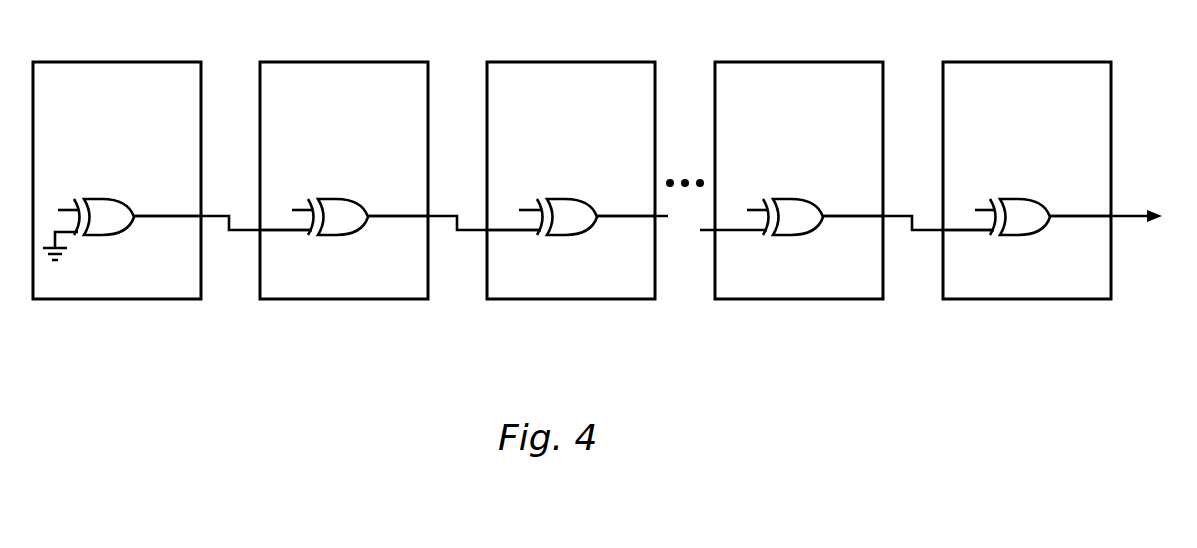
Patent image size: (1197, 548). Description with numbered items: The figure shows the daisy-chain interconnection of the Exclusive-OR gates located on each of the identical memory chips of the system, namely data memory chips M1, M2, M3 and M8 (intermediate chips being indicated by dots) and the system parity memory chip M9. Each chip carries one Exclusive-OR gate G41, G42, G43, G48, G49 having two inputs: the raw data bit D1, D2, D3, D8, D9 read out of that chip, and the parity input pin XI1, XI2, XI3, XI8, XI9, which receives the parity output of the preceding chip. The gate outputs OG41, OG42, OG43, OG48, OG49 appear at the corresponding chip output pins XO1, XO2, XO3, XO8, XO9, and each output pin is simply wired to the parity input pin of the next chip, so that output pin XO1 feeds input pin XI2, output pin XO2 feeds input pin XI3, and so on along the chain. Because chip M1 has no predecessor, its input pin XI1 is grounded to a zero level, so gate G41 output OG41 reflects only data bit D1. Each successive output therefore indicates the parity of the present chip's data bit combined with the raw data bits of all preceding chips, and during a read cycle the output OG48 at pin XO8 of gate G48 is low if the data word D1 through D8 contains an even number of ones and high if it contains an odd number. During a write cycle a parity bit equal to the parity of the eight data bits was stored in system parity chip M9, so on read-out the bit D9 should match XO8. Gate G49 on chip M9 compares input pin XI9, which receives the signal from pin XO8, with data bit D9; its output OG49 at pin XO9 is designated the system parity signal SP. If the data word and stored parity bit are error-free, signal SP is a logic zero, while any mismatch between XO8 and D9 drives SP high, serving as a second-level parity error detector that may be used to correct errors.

The memory chip M1 is at (172, 180).
The memory chip M2 is at (400, 180).
The memory chip M3 is at (577, 180).
The memory chip M8 is at (847, 180).
The system parity memory chip M9 is at (1065, 180).
The Exclusive-OR gate G41 is at (92, 199).
The Exclusive-OR gate G42 is at (326, 199).
The Exclusive-OR gate G43 is at (555, 199).
The Exclusive-OR gate G48 is at (781, 199).
The Exclusive-OR gate G49 is at (1008, 199).
The gate output OG41 is at (223, 222).
The gate output OG42 is at (454, 222).
The gate output OG43 is at (632, 222).
The gate output OG48 is at (908, 222).
The gate output OG49 is at (1118, 222).
The output pin XO1 is at (167, 232).
The output pin XO2 is at (398, 232).
The output pin XO3 is at (626, 232).
The output pin XO8 is at (853, 232).
The output pin XO9 is at (1080, 232).
The input pin XI1 is at (68, 233).
The input pin XI2 is at (287, 246).
The input pin XI3 is at (515, 246).
The input pin XI8 is at (733, 246).
The input pin XI9 is at (969, 246).
The raw data bit D1 is at (58, 209).
The raw data bit D2 is at (289, 209).
The raw data bit D3 is at (517, 209).
The raw data bit D8 is at (744, 209).
The stored system parity bit D9 is at (971, 209).
The system parity signal SP is at (1149, 216).